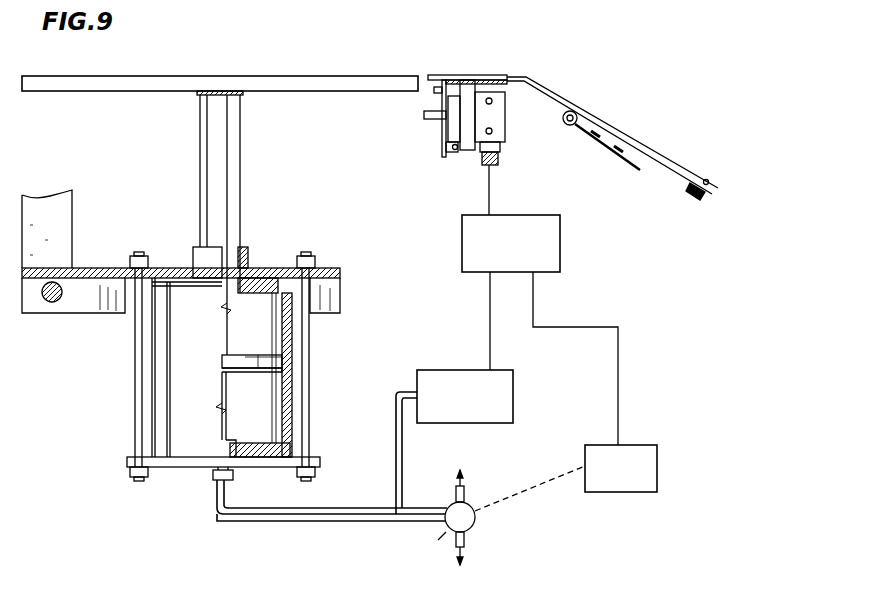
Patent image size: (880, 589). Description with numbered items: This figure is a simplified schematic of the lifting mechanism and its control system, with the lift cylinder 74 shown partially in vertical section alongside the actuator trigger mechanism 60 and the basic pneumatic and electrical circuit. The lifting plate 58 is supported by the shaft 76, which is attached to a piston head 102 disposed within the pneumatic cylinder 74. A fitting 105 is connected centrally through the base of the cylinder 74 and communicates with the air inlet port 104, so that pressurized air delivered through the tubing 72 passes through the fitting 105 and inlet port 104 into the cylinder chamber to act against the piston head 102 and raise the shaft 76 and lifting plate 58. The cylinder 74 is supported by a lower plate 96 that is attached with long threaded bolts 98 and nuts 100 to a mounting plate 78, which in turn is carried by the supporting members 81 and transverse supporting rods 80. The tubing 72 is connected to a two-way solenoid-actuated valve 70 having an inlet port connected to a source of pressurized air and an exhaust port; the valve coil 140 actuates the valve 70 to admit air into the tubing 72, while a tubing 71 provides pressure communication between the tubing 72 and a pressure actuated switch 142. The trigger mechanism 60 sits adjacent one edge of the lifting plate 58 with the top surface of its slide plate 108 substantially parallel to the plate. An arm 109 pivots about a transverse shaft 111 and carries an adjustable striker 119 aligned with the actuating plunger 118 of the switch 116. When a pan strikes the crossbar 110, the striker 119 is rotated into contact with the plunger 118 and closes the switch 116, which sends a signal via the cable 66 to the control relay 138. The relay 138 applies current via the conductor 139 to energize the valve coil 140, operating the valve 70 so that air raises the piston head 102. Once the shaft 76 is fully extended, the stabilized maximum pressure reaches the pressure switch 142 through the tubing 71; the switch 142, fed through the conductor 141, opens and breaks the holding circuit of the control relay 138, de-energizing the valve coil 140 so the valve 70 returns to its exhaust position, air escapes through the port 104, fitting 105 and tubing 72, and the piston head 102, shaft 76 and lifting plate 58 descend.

The lifting plate 58 is at (240, 78).
The actuator trigger mechanism 60 is at (526, 76).
The cable 66 is at (490, 190).
The two-way solenoid-actuated valve 70 is at (470, 502).
The tubing 71 is at (403, 446).
The tubing 72 is at (299, 522).
The lift cylinder 74 is at (290, 360).
The shaft 76 is at (241, 176).
The mounting plate 78 is at (100, 268).
The transverse supporting rods 80 is at (50, 303).
The supporting members 81 is at (70, 220).
The lower plate 96 is at (177, 470).
The long threaded bolts 98 is at (140, 397).
The nuts 100 is at (146, 266).
The piston head 102 is at (266, 372).
The air inlet port 104 is at (228, 440).
The fitting 105 is at (234, 476).
The slide plate 108 is at (438, 75).
The arm 109 is at (432, 115).
The crossbar 110 is at (436, 90).
The shaft 111 is at (462, 152).
The switch 116 is at (506, 114).
The actuating plunger 118 is at (446, 165).
The striker 119 is at (450, 140).
The control relay 138 is at (562, 242).
The conductor 139 is at (590, 327).
The valve coil 140 is at (658, 466).
The conductor 141 is at (490, 310).
The pressure actuated switch 142 is at (515, 402).